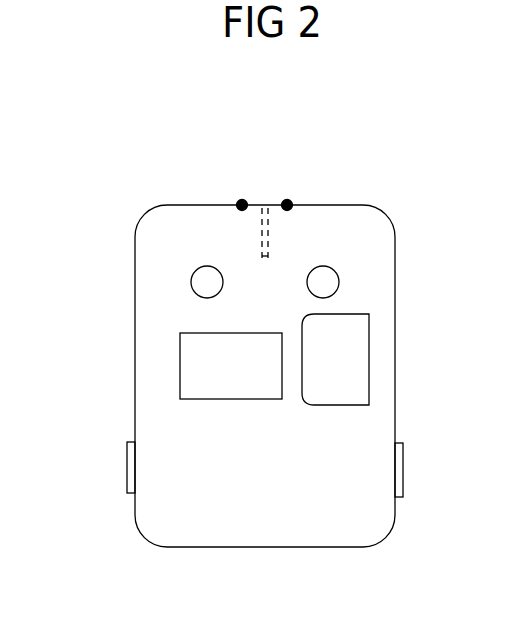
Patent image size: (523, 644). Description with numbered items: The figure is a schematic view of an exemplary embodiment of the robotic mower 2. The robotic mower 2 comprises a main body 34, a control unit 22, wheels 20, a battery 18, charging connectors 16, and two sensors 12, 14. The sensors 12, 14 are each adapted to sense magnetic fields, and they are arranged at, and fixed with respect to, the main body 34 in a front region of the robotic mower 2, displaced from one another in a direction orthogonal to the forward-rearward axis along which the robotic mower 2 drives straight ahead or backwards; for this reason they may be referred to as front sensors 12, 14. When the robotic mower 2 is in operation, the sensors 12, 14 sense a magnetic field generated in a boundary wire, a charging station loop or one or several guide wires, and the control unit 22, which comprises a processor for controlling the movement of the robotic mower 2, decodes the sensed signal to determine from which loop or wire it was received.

The robotic mower 2 is at (186, 478).
The sensor 12 is at (324, 280).
The sensor 14 is at (205, 280).
The charging connectors 16 is at (240, 203).
The battery 18 is at (323, 371).
The wheels 20 is at (263, 203).
The control unit 22 is at (209, 383).
The main body 34 is at (133, 363).